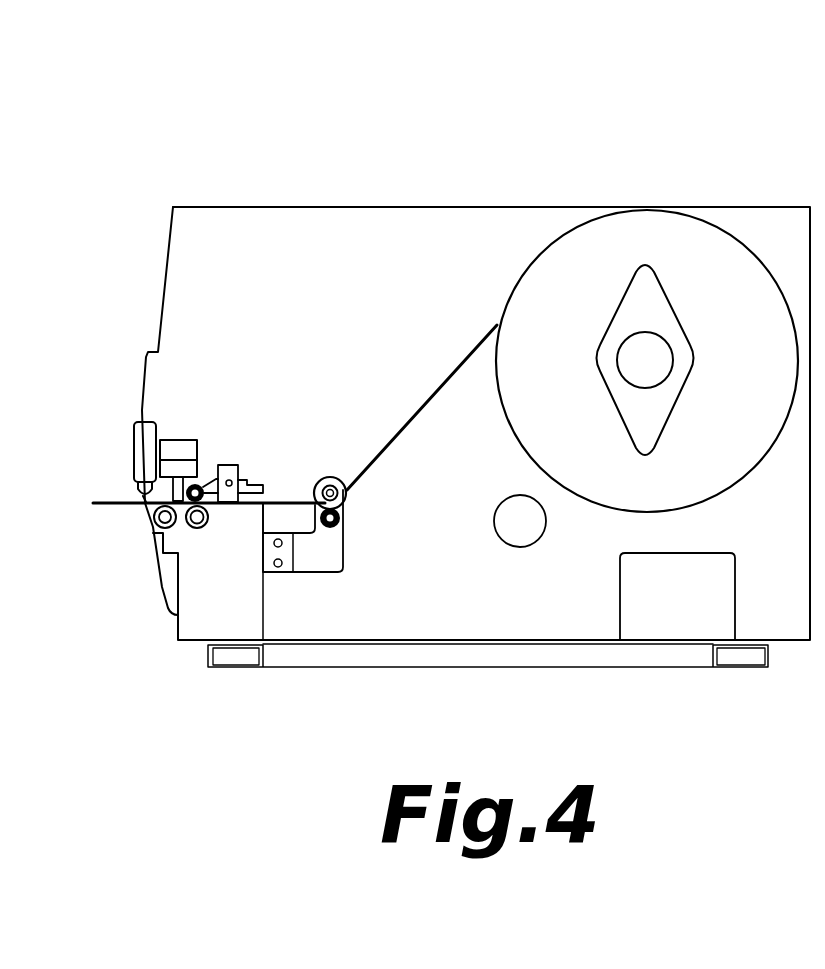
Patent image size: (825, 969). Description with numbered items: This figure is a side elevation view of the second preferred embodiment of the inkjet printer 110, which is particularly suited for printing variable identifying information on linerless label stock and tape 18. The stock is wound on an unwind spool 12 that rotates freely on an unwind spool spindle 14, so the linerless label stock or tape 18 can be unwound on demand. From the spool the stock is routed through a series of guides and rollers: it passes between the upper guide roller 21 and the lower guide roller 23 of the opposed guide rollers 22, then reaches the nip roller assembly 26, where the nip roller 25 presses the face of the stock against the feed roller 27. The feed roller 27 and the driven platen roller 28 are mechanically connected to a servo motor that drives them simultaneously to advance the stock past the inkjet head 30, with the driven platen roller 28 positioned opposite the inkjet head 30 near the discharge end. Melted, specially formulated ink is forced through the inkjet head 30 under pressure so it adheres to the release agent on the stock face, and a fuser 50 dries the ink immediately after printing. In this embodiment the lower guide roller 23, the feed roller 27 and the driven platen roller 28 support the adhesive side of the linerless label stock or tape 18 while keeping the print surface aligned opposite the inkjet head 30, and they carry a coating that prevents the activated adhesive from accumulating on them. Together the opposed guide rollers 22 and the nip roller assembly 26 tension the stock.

The inkjet printer 110 is at (440, 155).
The unwind spool 12 is at (755, 354).
The unwind spool spindle 14 is at (627, 370).
The linerless label stock and tape 18 is at (462, 357).
The upper guide roller 21 is at (333, 477).
The opposed guide rollers 22 is at (385, 486).
The lower guide roller 23 is at (343, 525).
The nip roller 25 is at (201, 485).
The nip roller assembly 26 is at (264, 438).
The feed roller 27 is at (204, 528).
The driven platen roller 28 is at (155, 526).
The inkjet head 30 is at (184, 439).
The fuser 50 is at (143, 443).